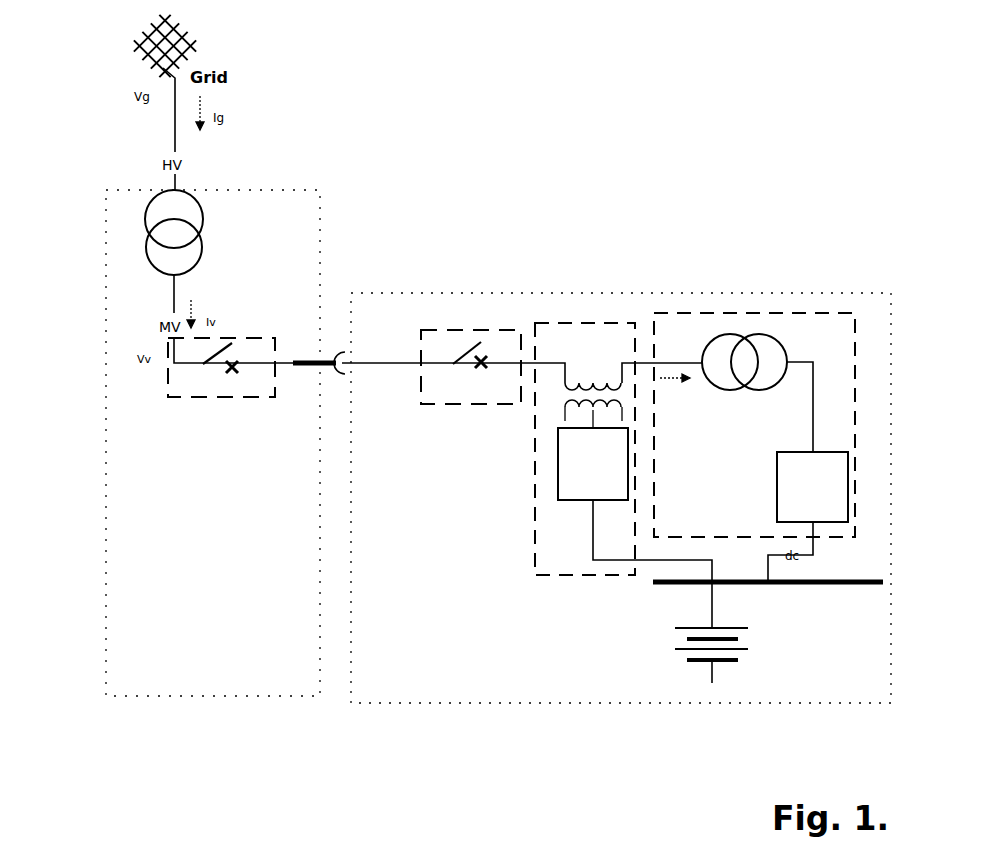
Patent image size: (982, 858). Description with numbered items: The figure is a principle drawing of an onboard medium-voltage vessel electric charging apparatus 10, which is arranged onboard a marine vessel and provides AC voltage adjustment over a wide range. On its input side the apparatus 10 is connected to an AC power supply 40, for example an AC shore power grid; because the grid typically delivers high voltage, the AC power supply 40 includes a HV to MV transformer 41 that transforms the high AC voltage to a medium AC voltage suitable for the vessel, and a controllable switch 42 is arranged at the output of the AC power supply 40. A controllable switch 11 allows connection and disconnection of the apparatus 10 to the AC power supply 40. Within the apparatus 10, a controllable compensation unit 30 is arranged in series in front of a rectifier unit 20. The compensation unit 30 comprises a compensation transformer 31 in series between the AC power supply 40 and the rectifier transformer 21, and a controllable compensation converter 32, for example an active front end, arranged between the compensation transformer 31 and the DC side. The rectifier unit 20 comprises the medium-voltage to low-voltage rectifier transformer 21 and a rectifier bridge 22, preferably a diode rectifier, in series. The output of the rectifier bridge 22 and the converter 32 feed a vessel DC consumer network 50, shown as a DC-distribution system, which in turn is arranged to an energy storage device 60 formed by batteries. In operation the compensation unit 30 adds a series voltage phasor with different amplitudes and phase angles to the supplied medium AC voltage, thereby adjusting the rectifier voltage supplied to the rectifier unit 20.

The onboard medium-voltage vessel electric charging apparatus 10 is at (716, 290).
The controllable switch 11 is at (431, 326).
The rectifier unit 20 is at (855, 308).
The rectifier transformer 21 is at (792, 345).
The rectifier bridge 22 is at (812, 487).
The controllable compensation unit 30 is at (573, 318).
The compensation transformer 31 is at (568, 402).
The controllable compensation converter 32 is at (593, 464).
The AC power supply 40 is at (276, 188).
The HV to MV transformer 41 is at (145, 203).
The controllable switch 42 is at (203, 399).
The vessel DC consumer network 50 is at (858, 581).
The energy storage device 60 is at (765, 647).